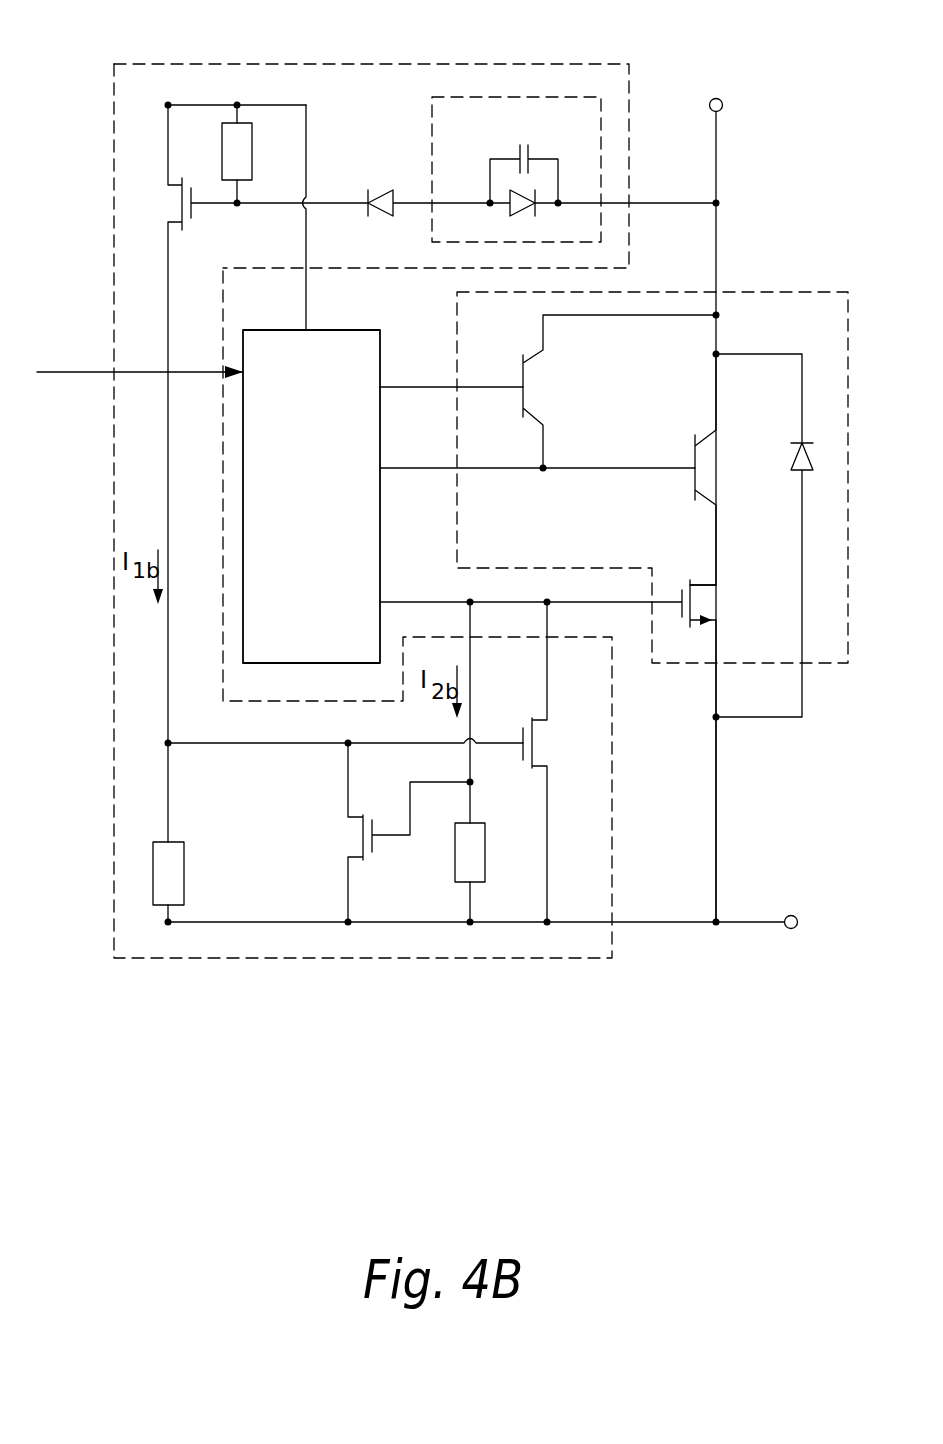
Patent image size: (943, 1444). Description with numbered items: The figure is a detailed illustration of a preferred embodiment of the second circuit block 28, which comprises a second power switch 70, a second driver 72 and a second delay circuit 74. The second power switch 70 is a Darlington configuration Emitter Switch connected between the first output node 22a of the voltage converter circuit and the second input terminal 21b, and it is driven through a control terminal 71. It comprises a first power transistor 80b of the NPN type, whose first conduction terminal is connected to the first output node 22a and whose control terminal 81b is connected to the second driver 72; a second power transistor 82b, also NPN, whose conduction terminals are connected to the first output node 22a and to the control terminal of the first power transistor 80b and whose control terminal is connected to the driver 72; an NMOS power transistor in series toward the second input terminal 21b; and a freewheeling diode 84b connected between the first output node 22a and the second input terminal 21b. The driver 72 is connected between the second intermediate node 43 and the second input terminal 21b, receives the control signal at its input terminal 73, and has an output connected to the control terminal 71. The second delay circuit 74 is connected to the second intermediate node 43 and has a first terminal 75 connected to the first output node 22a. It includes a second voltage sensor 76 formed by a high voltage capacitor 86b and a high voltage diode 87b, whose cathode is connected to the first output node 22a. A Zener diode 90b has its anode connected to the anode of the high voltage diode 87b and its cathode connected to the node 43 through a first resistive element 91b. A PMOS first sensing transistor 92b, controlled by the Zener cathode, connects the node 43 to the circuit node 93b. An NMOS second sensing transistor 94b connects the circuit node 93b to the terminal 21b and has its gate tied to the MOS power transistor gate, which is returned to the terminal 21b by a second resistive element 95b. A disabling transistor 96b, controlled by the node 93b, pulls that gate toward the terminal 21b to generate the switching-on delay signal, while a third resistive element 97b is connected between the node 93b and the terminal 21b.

The second intermediate node 43 is at (167, 103).
The first sensing transistor 92b is at (192, 182).
The first resistive element 91b is at (248, 152).
The second delay circuit 74 is at (362, 85).
The second voltage sensor 76 is at (542, 105).
The Zener diode 90b is at (384, 197).
The high voltage capacitor 86b is at (520, 150).
The high voltage diode 87b is at (513, 212).
The first terminal 75 is at (672, 203).
The first output node 22a is at (716, 204).
The second power switch 70 is at (818, 294).
The input terminal 73 is at (60, 371).
The second driver 72 is at (297, 517).
The control terminal 71 is at (487, 386).
The control terminal of the first power transistor 81b is at (505, 468).
The second power transistor 82b is at (524, 380).
The first power transistor 80b is at (698, 441).
The freewheeling diode 84b is at (812, 455).
The circuit node 93b is at (169, 744).
The disabling transistor 96b is at (548, 745).
The second sensing transistor 94b is at (363, 840).
The second resistive element 95b is at (455, 870).
The third resistive element 97b is at (184, 880).
The second input terminal 21b is at (716, 926).
The second circuit block 28 is at (229, 976).